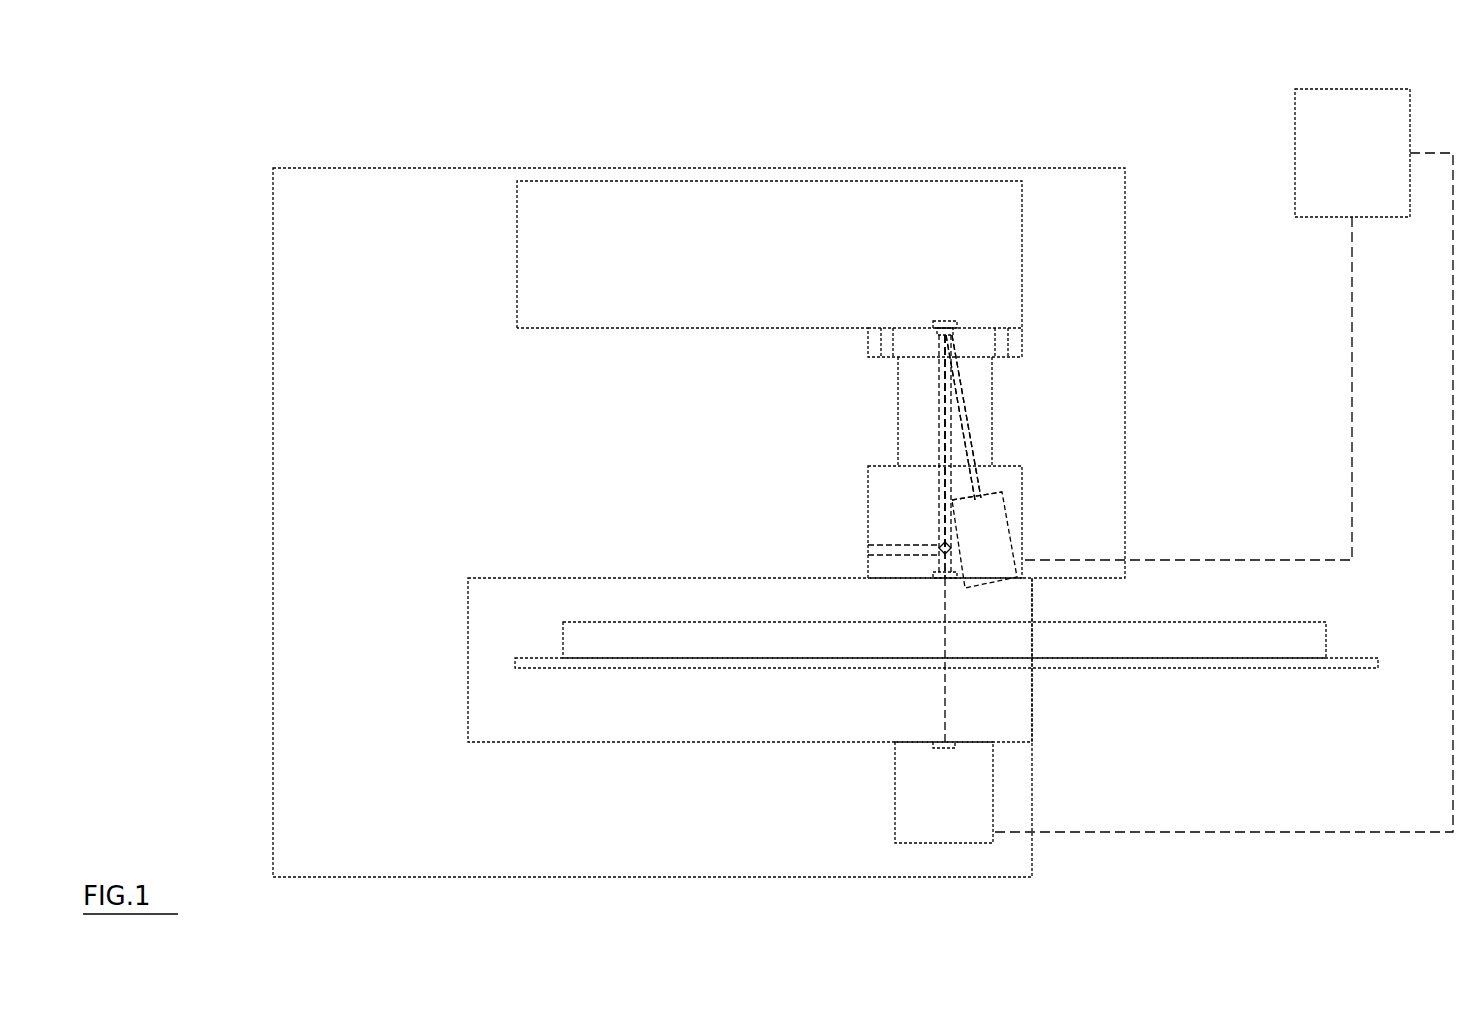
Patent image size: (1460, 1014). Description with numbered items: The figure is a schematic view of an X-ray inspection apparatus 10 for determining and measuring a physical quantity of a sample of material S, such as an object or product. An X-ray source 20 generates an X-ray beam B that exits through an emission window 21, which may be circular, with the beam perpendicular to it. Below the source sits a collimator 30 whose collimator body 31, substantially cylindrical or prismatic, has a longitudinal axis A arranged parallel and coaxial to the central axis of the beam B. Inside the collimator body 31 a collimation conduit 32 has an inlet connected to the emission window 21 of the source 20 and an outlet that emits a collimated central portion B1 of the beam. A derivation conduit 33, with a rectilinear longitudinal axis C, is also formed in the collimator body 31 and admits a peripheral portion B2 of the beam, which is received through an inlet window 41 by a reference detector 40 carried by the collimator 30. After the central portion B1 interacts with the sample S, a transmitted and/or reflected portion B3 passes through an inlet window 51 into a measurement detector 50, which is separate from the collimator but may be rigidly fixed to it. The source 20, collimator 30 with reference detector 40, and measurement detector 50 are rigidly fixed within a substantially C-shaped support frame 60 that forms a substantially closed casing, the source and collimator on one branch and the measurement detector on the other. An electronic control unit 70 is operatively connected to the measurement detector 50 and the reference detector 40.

The X-ray inspection apparatus 10 is at (773, 483).
The X-ray source 20 is at (763, 177).
The emission window 21 is at (950, 322).
The collimator 30 is at (862, 463).
The collimator body 31 is at (892, 503).
The collimation conduit 32 is at (938, 437).
The derivation conduit 33 is at (972, 427).
The reference detector 40 is at (1017, 531).
The inlet window 41 is at (998, 494).
The measurement detector 50 is at (892, 812).
The inlet window 51 is at (950, 746).
The support frame 60 is at (268, 448).
The electronic control unit 70 is at (1293, 152).
The sample of material S is at (1315, 638).
The X-ray beam B is at (940, 388).
The central portion of the beam B1 is at (940, 388).
The peripheral portion of the beam B2 is at (960, 415).
The transmitted and/or reflected portion of the beam B3 is at (945, 703).
The longitudinal axis A is at (940, 388).
The longitudinal axis of the derivation conduit C is at (960, 415).